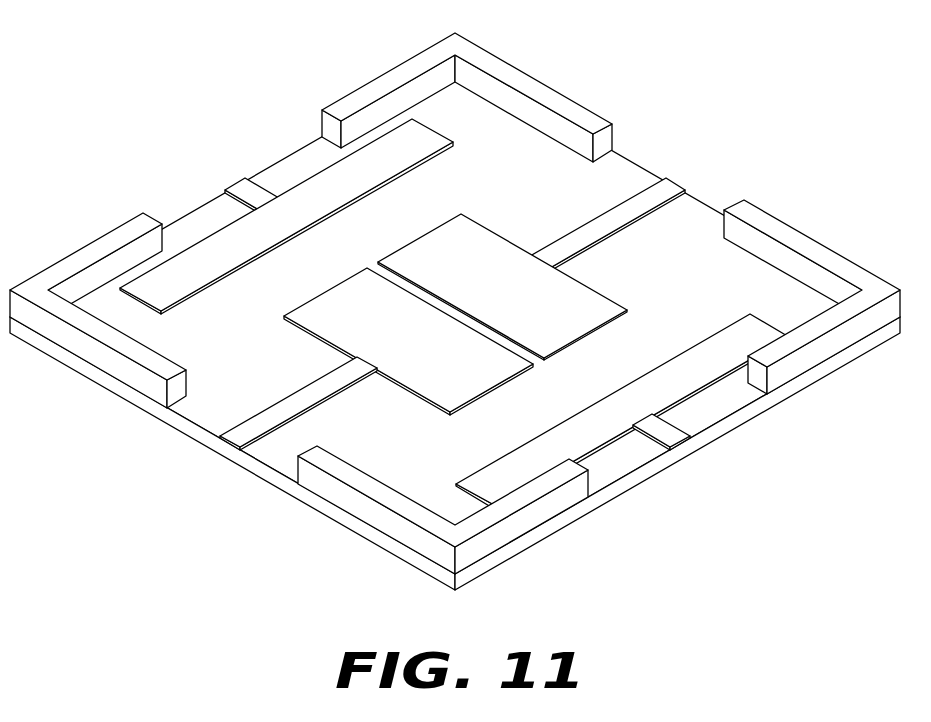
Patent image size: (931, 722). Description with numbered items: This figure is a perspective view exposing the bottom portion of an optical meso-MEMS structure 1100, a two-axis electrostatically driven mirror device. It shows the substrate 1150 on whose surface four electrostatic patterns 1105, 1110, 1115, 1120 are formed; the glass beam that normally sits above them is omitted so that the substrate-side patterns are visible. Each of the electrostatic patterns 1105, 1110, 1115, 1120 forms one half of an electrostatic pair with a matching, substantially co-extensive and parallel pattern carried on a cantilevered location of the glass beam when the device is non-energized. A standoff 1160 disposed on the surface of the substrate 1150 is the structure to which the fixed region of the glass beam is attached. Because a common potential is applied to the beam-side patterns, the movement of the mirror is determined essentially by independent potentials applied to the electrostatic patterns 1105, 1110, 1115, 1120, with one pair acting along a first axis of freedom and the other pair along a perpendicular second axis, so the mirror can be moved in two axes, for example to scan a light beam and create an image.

The optical meso-MEMS structure 1100 is at (455, 349).
The electrostatic pattern 1105 is at (554, 322).
The electrostatic pattern 1110 is at (389, 328).
The electrostatic pattern 1115 is at (308, 232).
The electrostatic pattern 1120 is at (735, 325).
The substrate 1150 is at (264, 478).
The standoff 1160 is at (391, 70).